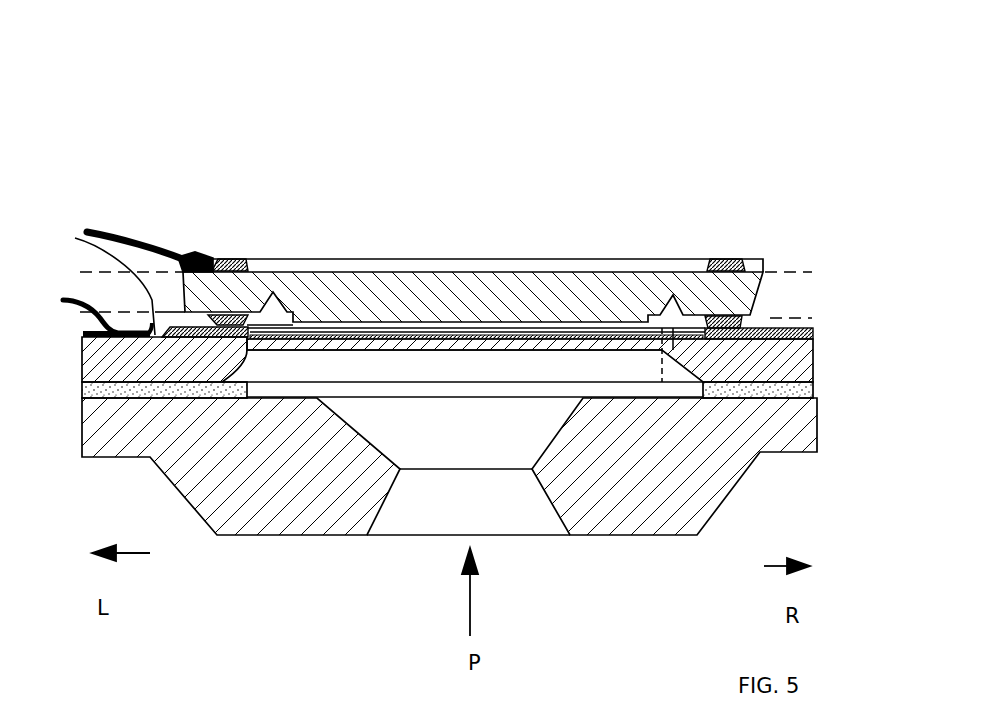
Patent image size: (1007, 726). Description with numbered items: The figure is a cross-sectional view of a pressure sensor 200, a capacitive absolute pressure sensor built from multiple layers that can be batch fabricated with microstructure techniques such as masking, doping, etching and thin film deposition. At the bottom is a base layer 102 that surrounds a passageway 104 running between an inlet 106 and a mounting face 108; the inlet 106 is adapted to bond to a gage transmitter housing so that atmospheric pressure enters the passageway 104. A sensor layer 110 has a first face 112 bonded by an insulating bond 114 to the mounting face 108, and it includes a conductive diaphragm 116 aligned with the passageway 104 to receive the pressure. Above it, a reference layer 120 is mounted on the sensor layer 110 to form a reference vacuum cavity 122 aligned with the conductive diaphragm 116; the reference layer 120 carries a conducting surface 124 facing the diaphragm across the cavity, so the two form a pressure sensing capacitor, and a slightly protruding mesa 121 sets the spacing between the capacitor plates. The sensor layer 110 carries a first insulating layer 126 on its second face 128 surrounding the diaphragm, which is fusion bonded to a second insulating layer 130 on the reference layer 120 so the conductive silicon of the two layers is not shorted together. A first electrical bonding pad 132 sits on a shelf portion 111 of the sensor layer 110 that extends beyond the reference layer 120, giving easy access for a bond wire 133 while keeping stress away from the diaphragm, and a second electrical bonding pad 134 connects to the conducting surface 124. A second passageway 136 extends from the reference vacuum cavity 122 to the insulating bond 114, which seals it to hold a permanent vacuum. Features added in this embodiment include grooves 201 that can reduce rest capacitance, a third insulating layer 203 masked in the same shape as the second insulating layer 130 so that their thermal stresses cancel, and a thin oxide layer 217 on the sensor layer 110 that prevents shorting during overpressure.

The pressure sensor 200 is at (705, 105).
The base layer 102 is at (700, 458).
The passageway 104 is at (503, 513).
The inlet 106 is at (567, 537).
The mounting face 108 is at (322, 402).
The sensor layer 110 is at (777, 364).
The shelf portion 111 is at (108, 340).
The first face 112 is at (250, 352).
The insulating bond 114 is at (247, 383).
The conductive diaphragm 116 is at (540, 347).
The reference layer 120 is at (623, 290).
The mesa 121 is at (647, 317).
The reference vacuum cavity 122 is at (420, 325).
The conducting surface 124 is at (300, 264).
The first insulating layer 126 is at (176, 326).
The second face 128 is at (113, 279).
The second insulating layer 130 is at (162, 313).
The first electrical bonding pad 132 is at (83, 329).
The bond wire 133 is at (72, 300).
The second electrical bonding pad 134 is at (207, 260).
The second passageway 136 is at (780, 372).
The grooves 201 is at (672, 295).
The third insulating layer 203 is at (730, 260).
The thin oxide layer 217 is at (483, 336).